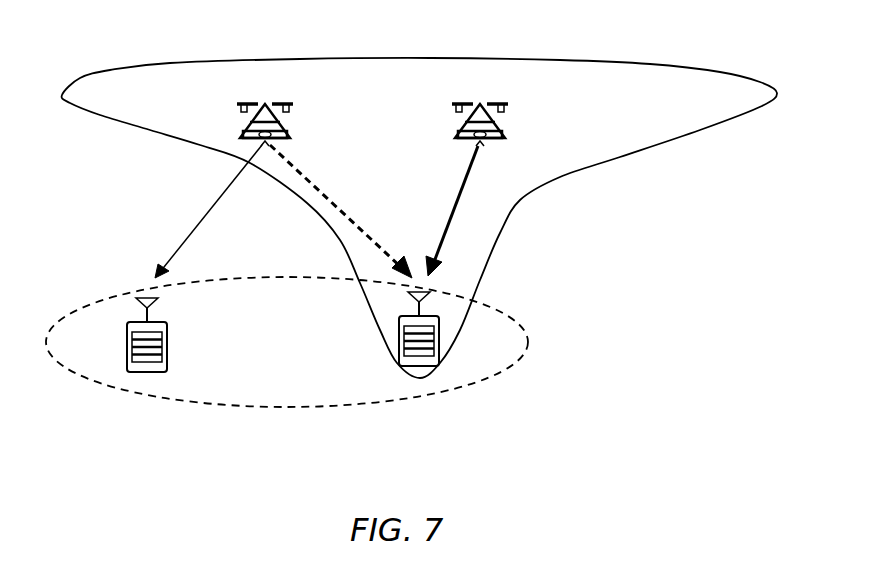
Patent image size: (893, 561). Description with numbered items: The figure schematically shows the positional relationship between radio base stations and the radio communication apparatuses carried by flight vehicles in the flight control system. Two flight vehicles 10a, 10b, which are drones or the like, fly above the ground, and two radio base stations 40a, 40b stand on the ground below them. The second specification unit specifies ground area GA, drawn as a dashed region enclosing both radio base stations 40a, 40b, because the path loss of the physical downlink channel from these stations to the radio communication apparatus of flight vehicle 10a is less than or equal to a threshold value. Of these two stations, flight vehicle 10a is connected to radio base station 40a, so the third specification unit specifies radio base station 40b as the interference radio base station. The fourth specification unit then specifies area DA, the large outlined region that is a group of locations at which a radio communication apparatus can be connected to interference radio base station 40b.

The flight vehicle 10a is at (245, 102).
The flight vehicle 10b is at (500, 100).
The radio base station 40a is at (147, 372).
The radio base station 40b is at (433, 367).
The area DA is at (622, 153).
The ground area GA is at (528, 336).